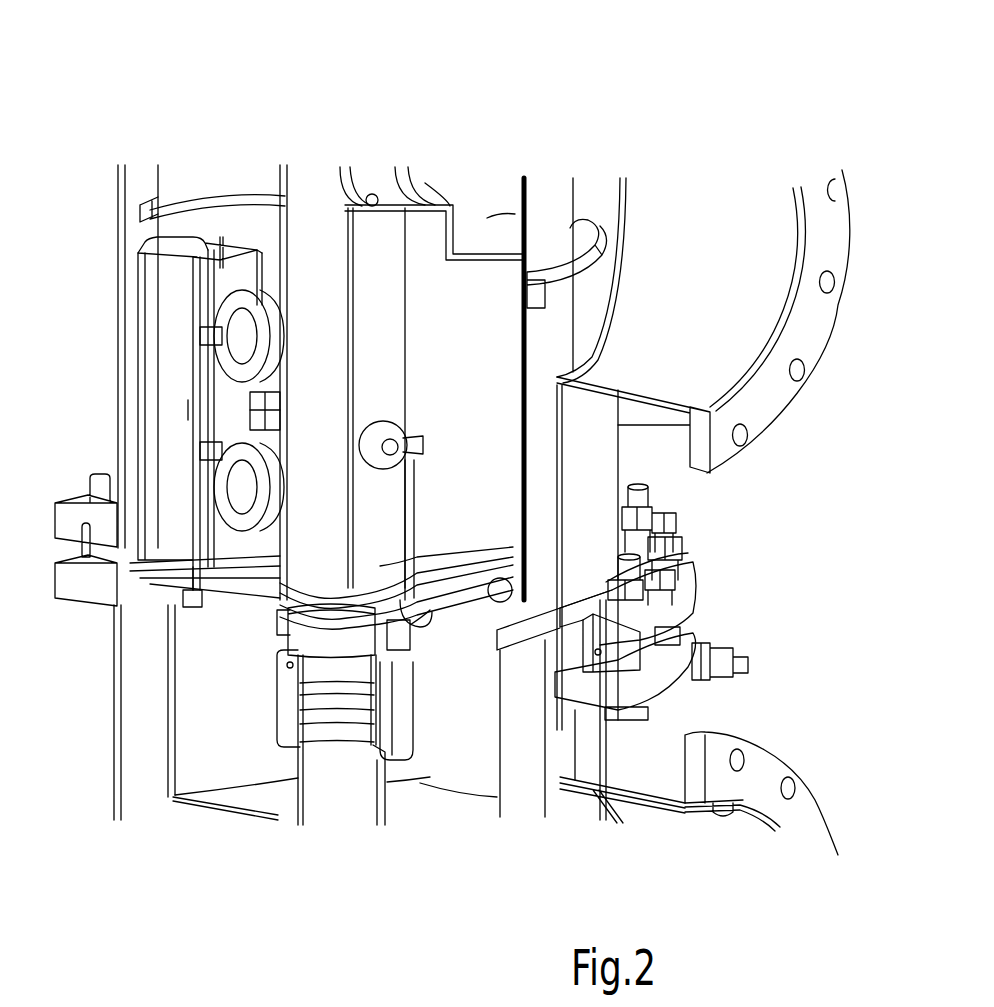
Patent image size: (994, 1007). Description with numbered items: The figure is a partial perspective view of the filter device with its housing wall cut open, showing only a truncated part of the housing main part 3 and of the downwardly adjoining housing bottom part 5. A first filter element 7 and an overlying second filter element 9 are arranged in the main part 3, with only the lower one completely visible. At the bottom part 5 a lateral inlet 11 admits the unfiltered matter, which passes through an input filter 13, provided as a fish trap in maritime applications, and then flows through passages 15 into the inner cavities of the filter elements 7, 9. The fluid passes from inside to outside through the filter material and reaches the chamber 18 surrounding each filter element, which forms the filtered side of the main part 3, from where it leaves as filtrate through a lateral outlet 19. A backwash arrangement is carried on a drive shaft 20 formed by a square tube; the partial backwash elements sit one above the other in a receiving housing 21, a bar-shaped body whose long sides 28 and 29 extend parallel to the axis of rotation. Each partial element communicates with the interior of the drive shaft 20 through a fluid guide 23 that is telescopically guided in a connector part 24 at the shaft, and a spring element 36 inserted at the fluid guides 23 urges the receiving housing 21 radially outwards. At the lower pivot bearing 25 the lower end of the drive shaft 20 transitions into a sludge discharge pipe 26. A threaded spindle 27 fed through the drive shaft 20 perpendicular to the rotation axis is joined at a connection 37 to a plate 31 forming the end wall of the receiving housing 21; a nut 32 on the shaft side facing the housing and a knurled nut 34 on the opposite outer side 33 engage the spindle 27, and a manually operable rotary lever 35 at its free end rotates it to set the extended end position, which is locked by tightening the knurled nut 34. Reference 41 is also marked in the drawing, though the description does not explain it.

The housing main part 3 is at (118, 347).
The housing bottom part 5 is at (113, 708).
The first filter element 7 is at (530, 478).
The second filter element 9 is at (165, 183).
The lateral inlet 11 is at (743, 800).
The input filter 13 is at (172, 733).
The passages 15 is at (232, 542).
The chamber 18 is at (545, 218).
The lateral outlet 19 is at (770, 380).
The drive shaft 20 is at (405, 357).
The receiving housing 21 is at (223, 237).
The fluid guide 23 is at (248, 248).
The connector part 24 is at (275, 362).
The lower pivot bearing 25 is at (403, 655).
The sludge discharge pipe 26 is at (375, 783).
The threaded spindle 27 is at (262, 397).
The long side 28 is at (197, 288).
The long side 29 is at (285, 285).
The plate 31 is at (222, 597).
The nut 32 is at (272, 428).
The outer side 33 is at (375, 325).
The knurled nut 34 is at (395, 432).
The rotary lever 35 is at (400, 527).
The spring element 36 is at (228, 335).
The connection 37 is at (190, 408).
The clamp 41 is at (140, 538).